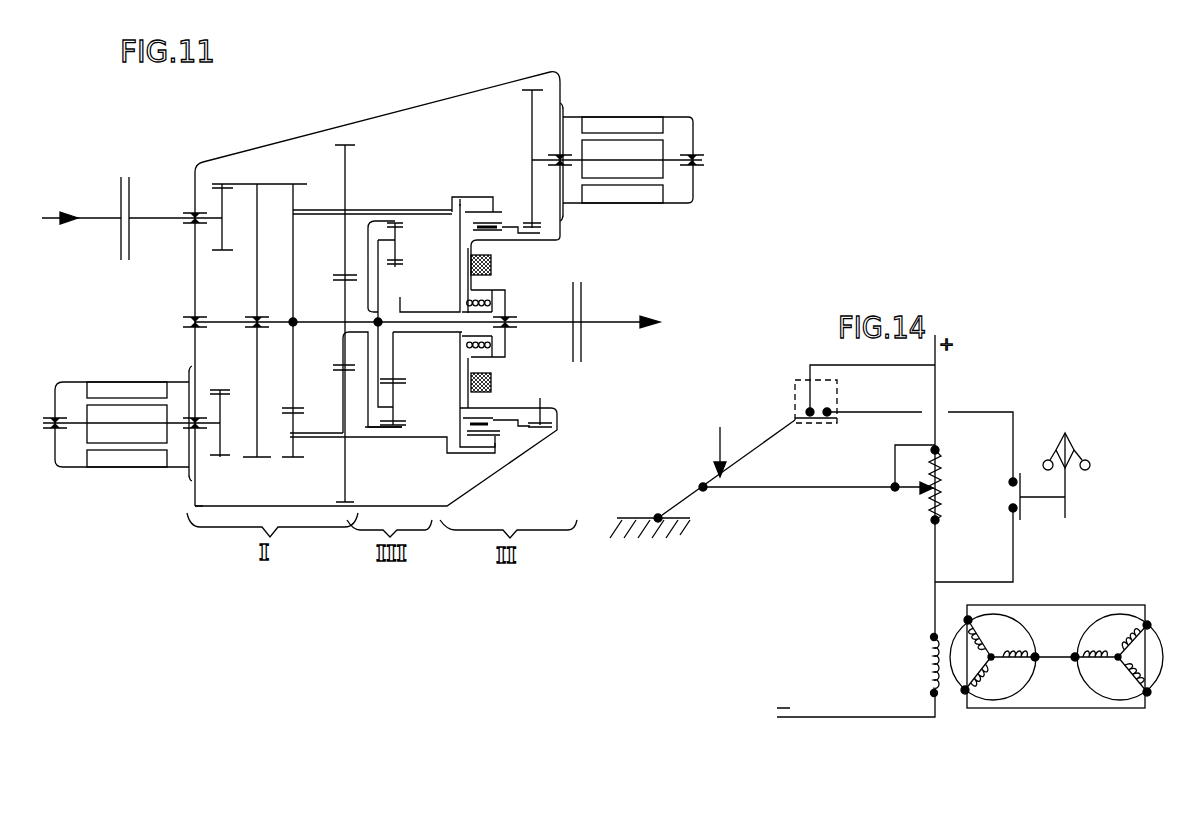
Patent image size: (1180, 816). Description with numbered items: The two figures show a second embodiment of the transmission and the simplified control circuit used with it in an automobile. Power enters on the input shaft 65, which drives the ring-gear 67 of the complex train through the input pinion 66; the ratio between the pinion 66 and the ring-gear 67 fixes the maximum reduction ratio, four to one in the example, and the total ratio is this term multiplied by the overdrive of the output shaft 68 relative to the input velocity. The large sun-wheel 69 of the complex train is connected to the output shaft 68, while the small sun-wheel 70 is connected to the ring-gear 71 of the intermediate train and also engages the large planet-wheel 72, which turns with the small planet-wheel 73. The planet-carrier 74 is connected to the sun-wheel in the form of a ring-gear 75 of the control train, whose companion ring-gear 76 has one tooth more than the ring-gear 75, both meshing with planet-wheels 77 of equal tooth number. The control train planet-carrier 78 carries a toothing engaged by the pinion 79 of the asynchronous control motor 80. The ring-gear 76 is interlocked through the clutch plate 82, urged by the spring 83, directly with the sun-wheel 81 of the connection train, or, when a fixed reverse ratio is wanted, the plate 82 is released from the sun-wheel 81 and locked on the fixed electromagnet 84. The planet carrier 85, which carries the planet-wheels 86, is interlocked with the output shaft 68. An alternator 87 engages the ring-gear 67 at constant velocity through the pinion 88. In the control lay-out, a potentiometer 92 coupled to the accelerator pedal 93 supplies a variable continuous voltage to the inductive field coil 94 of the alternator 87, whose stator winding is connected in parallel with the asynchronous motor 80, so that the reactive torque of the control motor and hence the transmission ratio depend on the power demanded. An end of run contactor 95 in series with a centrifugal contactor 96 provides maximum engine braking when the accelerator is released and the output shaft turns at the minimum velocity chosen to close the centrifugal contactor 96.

In FIG. 11, the power input shaft 65 is at (107, 217).
In FIG. 11, the input pinion 66 is at (222, 232).
In FIG. 11, the ring-gear 67 is at (257, 183).
In FIG. 11, the output shaft 68 is at (605, 323).
In FIG. 11, the large sun-wheel 69 is at (295, 287).
In FIG. 11, the small sun-wheel 70 is at (342, 350).
In FIG. 11, the ring-gear of intermediate train 71 is at (377, 220).
In FIG. 11, the large planet-wheel 72 is at (343, 143).
In FIG. 11, the small planet-wheel 73 is at (295, 188).
In FIG. 11, the planet-carrier 74 is at (360, 437).
In FIG. 11, the sun-wheel in the form of a ring-gear 75 is at (493, 197).
In FIG. 11, the sun-wheel in the form of a ring-gear 76 is at (455, 197).
In FIG. 11, the planet-wheel 77 is at (495, 432).
In FIG. 11, the control train planet-carrier 78 is at (542, 400).
In FIG. 11, the pinion 79 is at (530, 118).
In FIG. 11, the asynchronous control motor 80 is at (617, 150).
In FIG. 14, the asynchronous control motor 80 is at (1113, 698).
In FIG. 11, the sun-wheel of the connection train 81 is at (394, 378).
In FIG. 11, the plate 82 is at (466, 283).
In FIG. 11, the spring 83 is at (490, 298).
In FIG. 11, the fixed electromagnet 84 is at (492, 270).
In FIG. 11, the planet carrier 85 is at (378, 363).
In FIG. 11, the planet-wheels 86 is at (395, 412).
In FIG. 11, the alternator 87 is at (122, 433).
In FIG. 14, the alternator 87 is at (1000, 695).
In FIG. 11, the pinion 88 is at (215, 408).
In FIG. 14, the potentiometer 92 is at (937, 478).
In FIG. 14, the accelerator pedal 93 is at (765, 436).
In FIG. 14, the winding 94 is at (925, 657).
In FIG. 14, the end of run contactor 95 is at (826, 426).
In FIG. 14, the centrifugal contactor 96 is at (1022, 506).